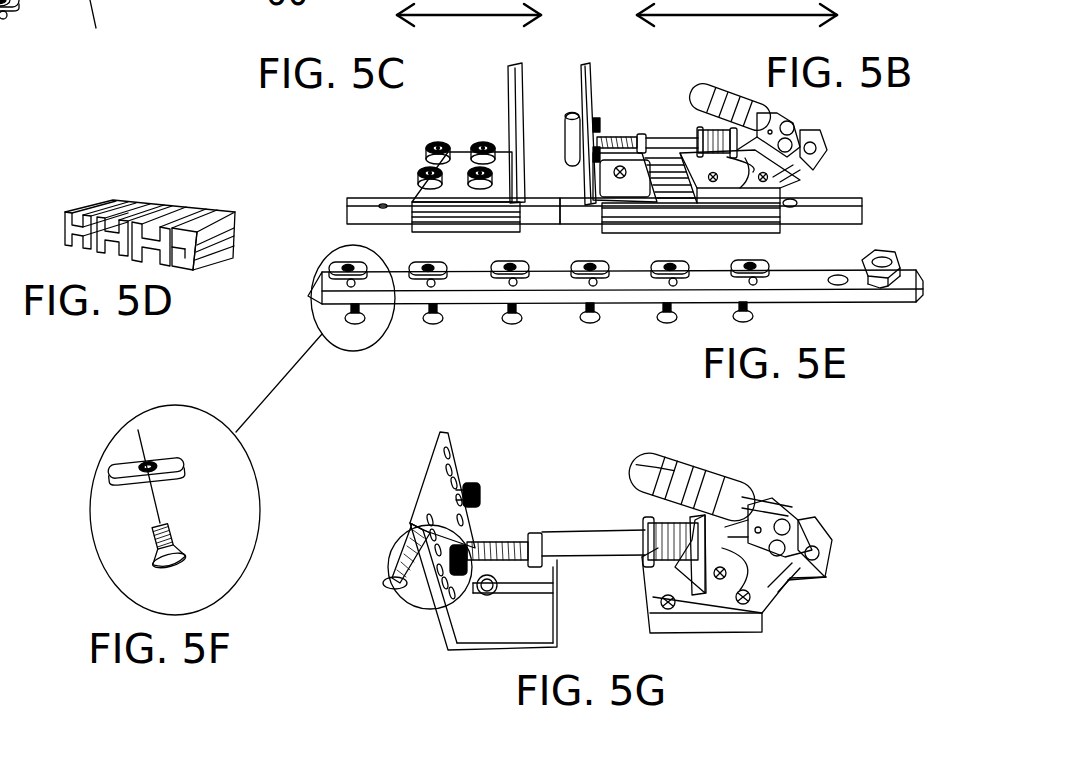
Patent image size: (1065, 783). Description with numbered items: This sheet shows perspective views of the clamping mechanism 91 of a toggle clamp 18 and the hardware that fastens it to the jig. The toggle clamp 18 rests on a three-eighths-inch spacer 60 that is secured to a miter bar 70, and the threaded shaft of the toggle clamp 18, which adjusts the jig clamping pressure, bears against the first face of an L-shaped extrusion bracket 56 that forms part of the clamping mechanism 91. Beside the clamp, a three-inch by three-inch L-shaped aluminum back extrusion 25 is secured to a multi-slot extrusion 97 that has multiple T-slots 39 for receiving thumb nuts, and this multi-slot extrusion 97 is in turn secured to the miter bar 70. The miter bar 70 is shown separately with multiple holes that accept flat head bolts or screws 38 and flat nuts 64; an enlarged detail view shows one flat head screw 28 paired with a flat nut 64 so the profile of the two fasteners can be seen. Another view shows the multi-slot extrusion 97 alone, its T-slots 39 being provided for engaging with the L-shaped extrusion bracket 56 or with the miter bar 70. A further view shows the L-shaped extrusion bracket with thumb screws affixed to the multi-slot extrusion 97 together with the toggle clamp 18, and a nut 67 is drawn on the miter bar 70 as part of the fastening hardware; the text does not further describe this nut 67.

In FIG. 5B, the toggle clamp 18 is at (817, 153).
In FIG. 5G, the toggle clamp 18 is at (708, 470).
In FIG. 5C, the L-shaped aluminum back extrusion 25 is at (462, 160).
In FIG. 5B, the flat head screw 28 is at (567, 115).
In FIG. 5G, the flat head screw 28 is at (510, 617).
In FIG. 5E, the flat head bolts or screws 38 is at (577, 312).
In FIG. 5F, the flat head bolts or screws 38 is at (192, 532).
In FIG. 5D, the T-slots 39 is at (170, 183).
In FIG. 5B, the L-shaped extrusion bracket 56 is at (588, 113).
In FIG. 5G, the L-shaped extrusion bracket 56 is at (578, 519).
In FIG. 5G, the spacer 60 is at (727, 630).
In FIG. 5E, the flat nut 64 is at (384, 143).
In FIG. 5F, the flat nut 64 is at (164, 447).
In FIG. 5E, the hex nut 67 is at (905, 245).
In FIG. 5E, the miter bar 70 is at (490, 288).
In FIG. 5G, the clamping mechanism 91 is at (786, 582).
In FIG. 5D, the multi-slot extrusion 97 is at (80, 210).